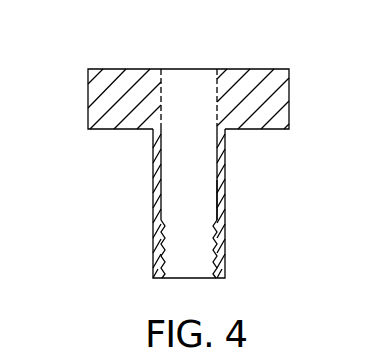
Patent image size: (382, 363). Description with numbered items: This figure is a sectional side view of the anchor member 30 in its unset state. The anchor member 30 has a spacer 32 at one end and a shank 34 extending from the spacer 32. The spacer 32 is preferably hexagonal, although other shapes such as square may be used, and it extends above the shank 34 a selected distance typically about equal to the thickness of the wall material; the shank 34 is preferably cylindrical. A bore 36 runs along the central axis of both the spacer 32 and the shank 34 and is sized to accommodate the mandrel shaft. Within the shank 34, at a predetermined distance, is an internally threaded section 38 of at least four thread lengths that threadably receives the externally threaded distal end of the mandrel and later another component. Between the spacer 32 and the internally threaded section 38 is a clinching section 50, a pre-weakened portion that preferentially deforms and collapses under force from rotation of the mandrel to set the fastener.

The anchor member 30 is at (74, 113).
The spacer 32 is at (289, 100).
The shank 34 is at (150, 132).
The bore 36 is at (186, 76).
The internally threaded section 38 is at (224, 258).
The clinching section 50 is at (230, 180).